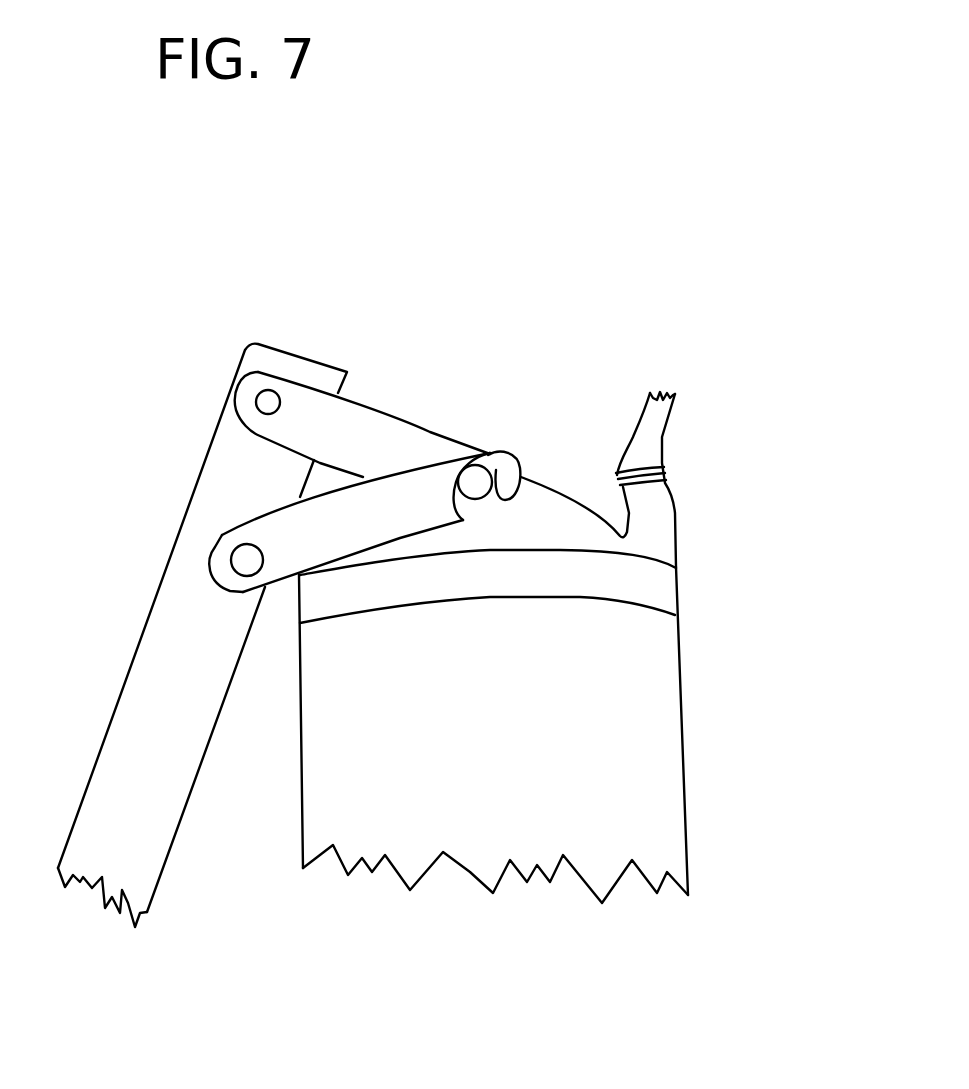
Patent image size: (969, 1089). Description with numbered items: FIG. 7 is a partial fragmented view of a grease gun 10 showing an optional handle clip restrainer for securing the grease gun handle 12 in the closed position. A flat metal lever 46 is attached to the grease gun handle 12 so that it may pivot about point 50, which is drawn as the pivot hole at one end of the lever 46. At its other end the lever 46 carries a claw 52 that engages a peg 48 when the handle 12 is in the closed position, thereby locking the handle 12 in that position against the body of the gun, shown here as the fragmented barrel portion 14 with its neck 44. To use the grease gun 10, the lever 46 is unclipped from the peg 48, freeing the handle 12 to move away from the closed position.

The grease gun 10 is at (763, 550).
The grease gun handle 12 is at (157, 668).
The container body 14 is at (640, 731).
The container neck 44 is at (657, 442).
The flat metal lever 46 is at (397, 500).
The peg 48 is at (477, 481).
The pivot point 50 is at (240, 556).
The claw 52 is at (510, 454).